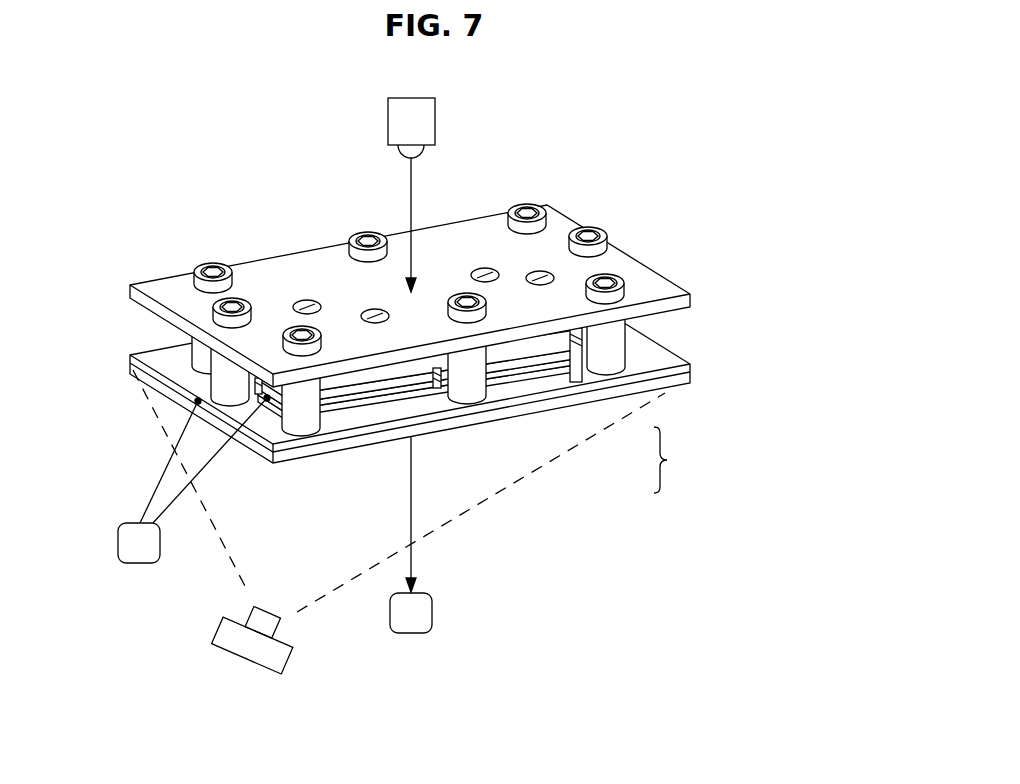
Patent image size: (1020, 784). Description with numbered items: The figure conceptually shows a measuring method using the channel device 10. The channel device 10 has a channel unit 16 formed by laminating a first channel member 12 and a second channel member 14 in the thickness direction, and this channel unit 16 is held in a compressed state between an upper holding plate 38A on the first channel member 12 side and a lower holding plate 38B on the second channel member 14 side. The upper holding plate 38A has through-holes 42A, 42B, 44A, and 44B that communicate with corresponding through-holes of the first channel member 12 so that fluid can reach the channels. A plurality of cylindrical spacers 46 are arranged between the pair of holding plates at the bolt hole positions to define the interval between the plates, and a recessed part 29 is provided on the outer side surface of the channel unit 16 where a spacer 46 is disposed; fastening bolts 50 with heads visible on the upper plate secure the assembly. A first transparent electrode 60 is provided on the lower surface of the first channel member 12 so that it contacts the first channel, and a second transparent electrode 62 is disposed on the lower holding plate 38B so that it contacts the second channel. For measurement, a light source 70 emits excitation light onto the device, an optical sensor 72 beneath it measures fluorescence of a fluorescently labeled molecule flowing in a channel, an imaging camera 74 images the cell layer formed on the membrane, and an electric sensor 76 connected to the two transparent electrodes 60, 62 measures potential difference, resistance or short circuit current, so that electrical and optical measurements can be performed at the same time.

The channel device 10 is at (552, 107).
The first channel member 12 is at (527, 353).
The second channel member 14 is at (523, 378).
The channel unit 16 is at (673, 460).
The recessed part 29 is at (437, 388).
The holding plate 38A is at (648, 282).
The holding plate 38B is at (661, 384).
The through-hole 42A is at (305, 300).
The through-hole 42B is at (537, 272).
The through-hole 44A is at (378, 322).
The through-hole 44B is at (484, 268).
The spacer 46 is at (608, 343).
The bolt 50 is at (214, 306).
The first transparent electrode 60 is at (348, 422).
The second transparent electrode 62 is at (293, 460).
The light source 70 is at (435, 117).
The optical sensor 72 is at (412, 633).
The imaging camera 74 is at (247, 673).
The electric sensor 76 is at (138, 563).